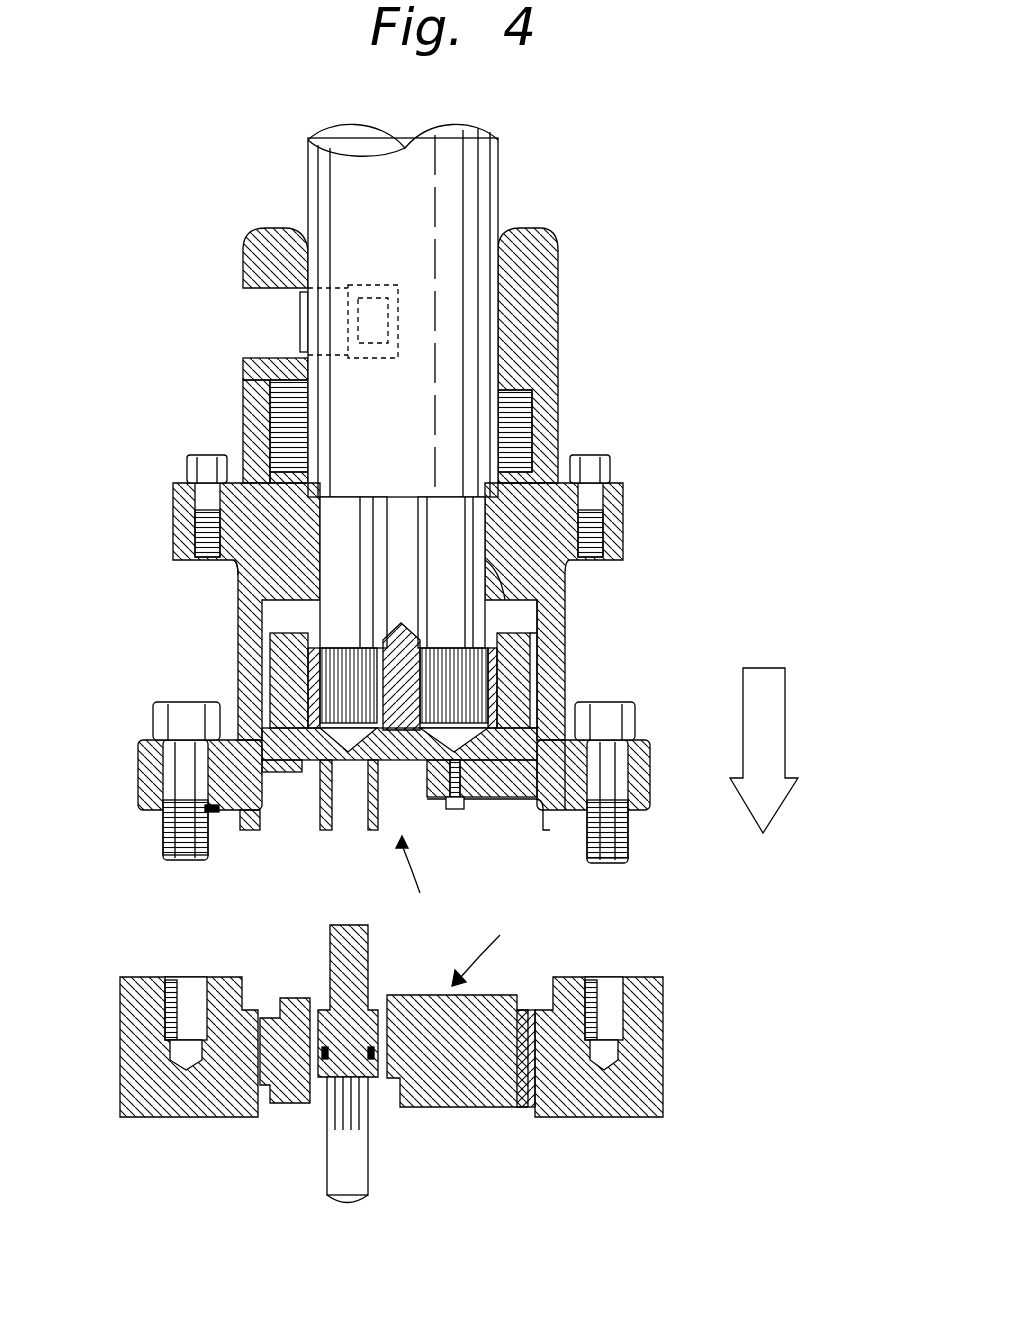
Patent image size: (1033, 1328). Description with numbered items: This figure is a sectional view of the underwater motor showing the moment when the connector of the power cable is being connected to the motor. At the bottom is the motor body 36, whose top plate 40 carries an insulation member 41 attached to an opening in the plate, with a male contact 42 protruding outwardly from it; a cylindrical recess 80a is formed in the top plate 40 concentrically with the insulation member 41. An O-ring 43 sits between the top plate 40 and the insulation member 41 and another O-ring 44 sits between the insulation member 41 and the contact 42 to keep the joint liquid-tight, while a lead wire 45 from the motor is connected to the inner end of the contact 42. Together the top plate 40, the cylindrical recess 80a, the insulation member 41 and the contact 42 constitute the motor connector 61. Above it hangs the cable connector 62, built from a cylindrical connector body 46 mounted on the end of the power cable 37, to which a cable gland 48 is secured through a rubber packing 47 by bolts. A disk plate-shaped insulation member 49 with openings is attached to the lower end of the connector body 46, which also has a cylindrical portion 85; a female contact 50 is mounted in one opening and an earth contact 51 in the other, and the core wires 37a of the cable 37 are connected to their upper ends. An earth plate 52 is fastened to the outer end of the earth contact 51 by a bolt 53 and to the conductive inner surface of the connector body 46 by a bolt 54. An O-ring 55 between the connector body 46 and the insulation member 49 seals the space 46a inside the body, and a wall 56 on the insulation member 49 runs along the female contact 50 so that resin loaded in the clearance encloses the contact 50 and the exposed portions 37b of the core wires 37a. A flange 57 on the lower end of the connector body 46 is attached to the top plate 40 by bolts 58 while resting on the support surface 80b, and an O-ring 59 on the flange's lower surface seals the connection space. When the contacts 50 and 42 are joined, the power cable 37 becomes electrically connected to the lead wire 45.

The motor body 36 is at (676, 1180).
The power cable 37 is at (483, 156).
The core wires 37a is at (333, 523).
The exposed portions 37b is at (300, 625).
The top plate 40 is at (172, 1098).
The insulation member 41 is at (490, 1092).
The male contact 42 is at (284, 1105).
The O-ring 43 is at (528, 1070).
The O-ring 44 is at (388, 1078).
The lead wire 45 is at (340, 1160).
The connector body 46 is at (548, 602).
The space 46a is at (503, 583).
The rubber packing 47 is at (545, 386).
The cable gland 48 is at (540, 290).
The insulation member 49 is at (263, 728).
The female contact 50 is at (303, 770).
The earth contact 51 is at (522, 700).
The earth plate 52 is at (650, 772).
The bolt 53 is at (455, 812).
The bolt 54 is at (530, 832).
The O-ring 55 is at (470, 748).
The wall 56 is at (277, 658).
The flange 57 is at (242, 590).
The bolts 58 is at (636, 712).
The O-ring 59 is at (225, 814).
The motor connector 61 is at (424, 992).
The cable connector 62 is at (418, 877).
The cylindrical recess 80a is at (258, 982).
The support surface 80b is at (642, 976).
The cylindrical portion 85 is at (258, 828).